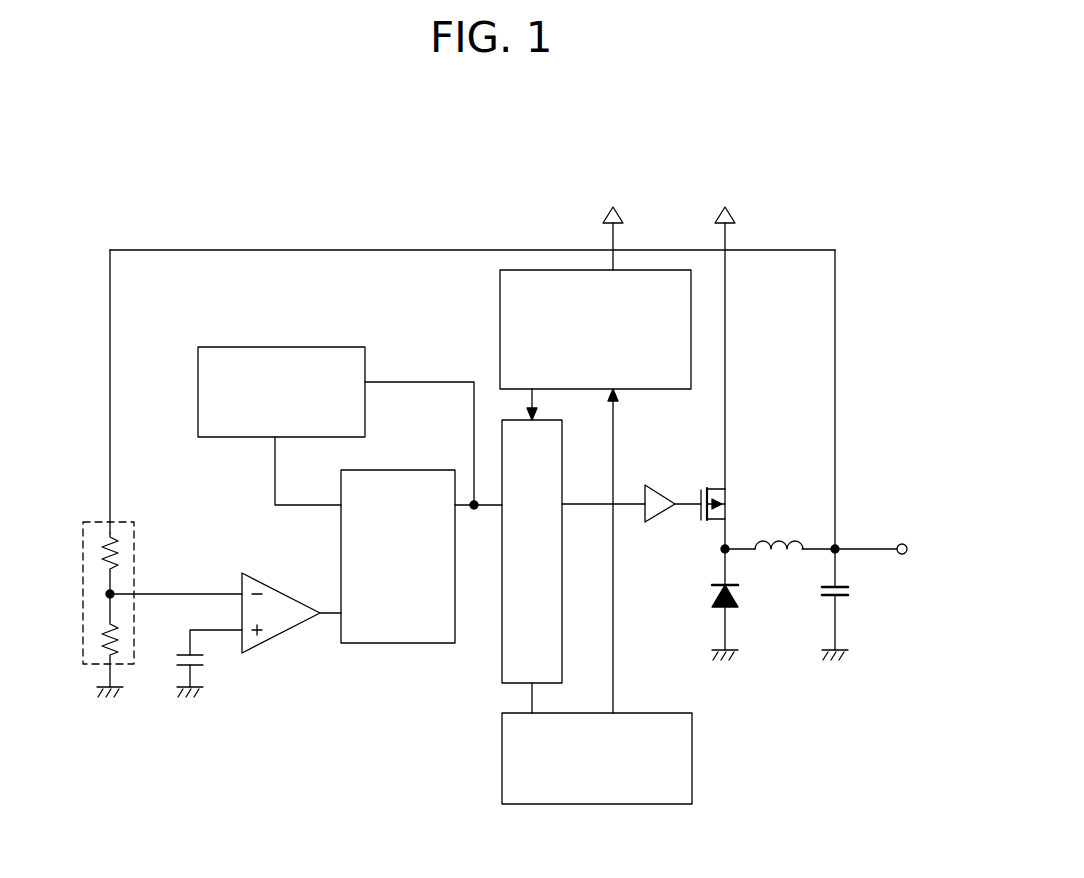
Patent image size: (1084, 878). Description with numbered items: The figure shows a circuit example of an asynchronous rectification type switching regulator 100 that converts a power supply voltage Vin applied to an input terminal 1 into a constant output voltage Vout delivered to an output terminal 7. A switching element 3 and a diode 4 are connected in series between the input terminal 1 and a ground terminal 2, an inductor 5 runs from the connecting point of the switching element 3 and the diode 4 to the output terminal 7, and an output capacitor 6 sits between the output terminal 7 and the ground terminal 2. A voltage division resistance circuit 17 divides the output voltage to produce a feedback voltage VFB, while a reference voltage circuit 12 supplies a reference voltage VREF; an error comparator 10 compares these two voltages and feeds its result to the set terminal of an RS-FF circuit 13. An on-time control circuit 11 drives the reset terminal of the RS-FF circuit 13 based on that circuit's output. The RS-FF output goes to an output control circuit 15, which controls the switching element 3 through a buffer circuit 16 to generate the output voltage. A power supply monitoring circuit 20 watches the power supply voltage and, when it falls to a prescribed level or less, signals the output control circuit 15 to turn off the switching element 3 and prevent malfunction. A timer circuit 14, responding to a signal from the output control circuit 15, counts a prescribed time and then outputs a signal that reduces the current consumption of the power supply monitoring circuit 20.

The switching regulator 100 is at (750, 132).
The input terminal 1 is at (733, 212).
The ground terminal 2 is at (725, 664).
The switching element 3 is at (735, 488).
The diode 4 is at (712, 610).
The inductor 5 is at (780, 530).
The output capacitor 6 is at (825, 607).
The output terminal 7 is at (902, 540).
The error comparator 10 is at (260, 575).
The on-time control circuit 11 is at (198, 393).
The reference voltage circuit 12 is at (207, 660).
The RS-FF circuit 13 is at (390, 643).
The timer circuit 14 is at (595, 804).
The output control circuit 15 is at (500, 670).
The buffer circuit 16 is at (658, 515).
The voltage division resistance circuit 17 is at (134, 522).
The power supply monitoring circuit 20 is at (643, 390).